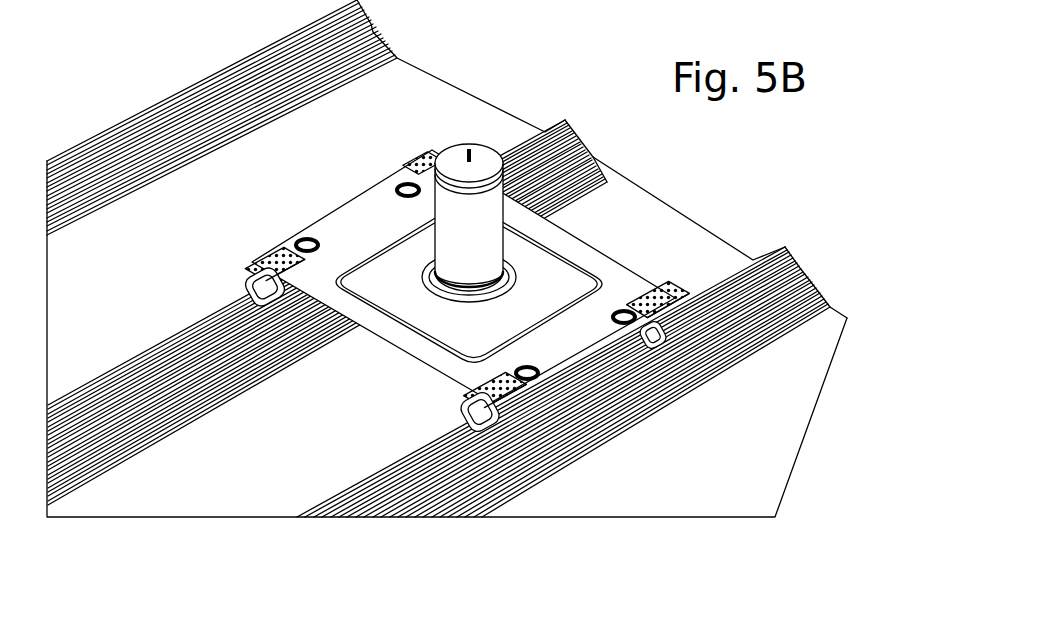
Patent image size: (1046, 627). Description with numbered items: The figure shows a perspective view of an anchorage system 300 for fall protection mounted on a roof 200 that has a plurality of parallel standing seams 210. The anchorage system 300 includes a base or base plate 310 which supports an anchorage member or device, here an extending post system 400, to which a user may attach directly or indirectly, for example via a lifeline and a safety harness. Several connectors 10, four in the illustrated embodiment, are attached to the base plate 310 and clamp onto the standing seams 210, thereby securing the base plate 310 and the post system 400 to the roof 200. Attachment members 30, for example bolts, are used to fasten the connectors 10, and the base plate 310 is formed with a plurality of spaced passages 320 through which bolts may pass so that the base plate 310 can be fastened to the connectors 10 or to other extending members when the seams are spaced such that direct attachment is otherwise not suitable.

The connector 10 is at (240, 271).
The attachment member 30 is at (284, 252).
The roof 200 is at (274, 489).
The standing seam 210 is at (372, 0).
The anchorage system 300 is at (487, 114).
The base plate 310 is at (616, 270).
The spaced passage 320 is at (664, 290).
The extending post system 400 is at (563, 216).